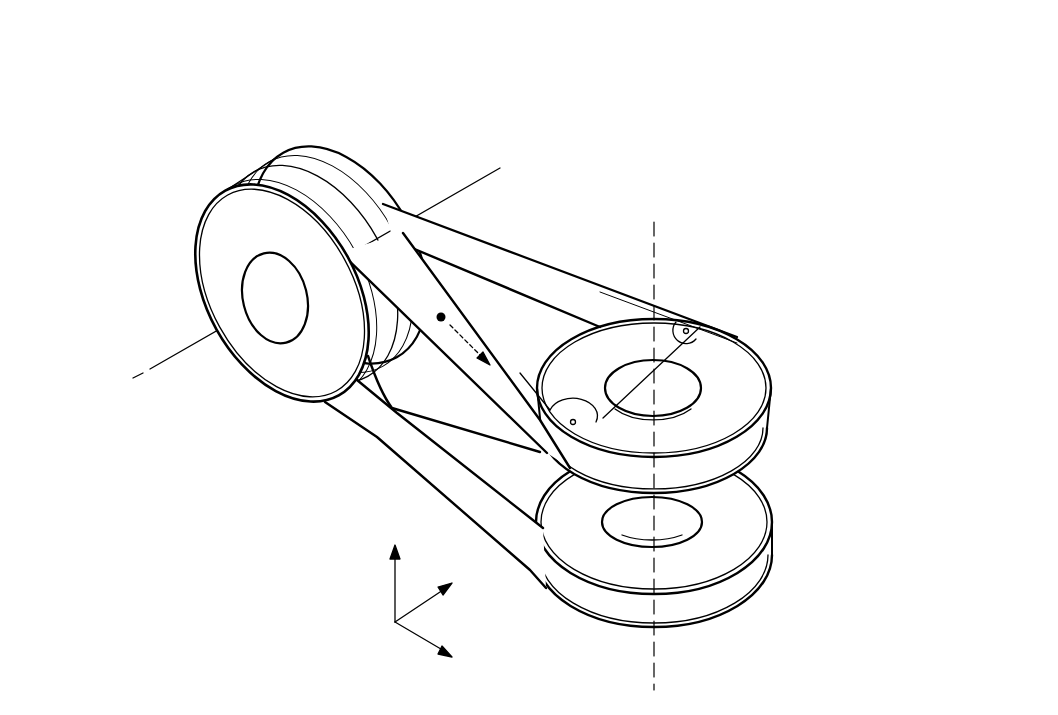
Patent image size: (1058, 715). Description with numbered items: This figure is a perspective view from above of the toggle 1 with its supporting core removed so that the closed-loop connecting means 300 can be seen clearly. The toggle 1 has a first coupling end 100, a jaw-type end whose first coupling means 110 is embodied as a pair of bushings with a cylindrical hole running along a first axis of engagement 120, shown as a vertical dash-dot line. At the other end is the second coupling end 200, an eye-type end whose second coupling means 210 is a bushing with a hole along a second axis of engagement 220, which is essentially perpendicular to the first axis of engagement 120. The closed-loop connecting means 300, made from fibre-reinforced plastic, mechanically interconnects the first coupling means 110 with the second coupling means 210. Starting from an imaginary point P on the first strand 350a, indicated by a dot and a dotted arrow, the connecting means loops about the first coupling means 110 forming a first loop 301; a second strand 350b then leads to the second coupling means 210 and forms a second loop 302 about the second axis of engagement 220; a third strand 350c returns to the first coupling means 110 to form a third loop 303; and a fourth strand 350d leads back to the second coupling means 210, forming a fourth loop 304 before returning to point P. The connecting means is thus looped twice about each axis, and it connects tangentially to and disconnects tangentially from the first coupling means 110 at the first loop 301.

The toggle 1 is at (753, 136).
The first coupling end 100 is at (778, 617).
The first coupling means 110 is at (748, 414).
The first axis of engagement 120 is at (658, 222).
The second coupling end 200 is at (150, 220).
The second coupling means 210 is at (222, 216).
The second axis of engagement 220 is at (195, 335).
The closed-loop connecting means 300 is at (524, 251).
The first loop 301 is at (717, 463).
The second loop 302 is at (329, 168).
The third loop 303 is at (723, 590).
The fourth loop 304 is at (273, 178).
The first strand 350a is at (510, 386).
The second strand 350b is at (556, 285).
The third strand 350c is at (426, 402).
The fourth strand 350d is at (447, 472).